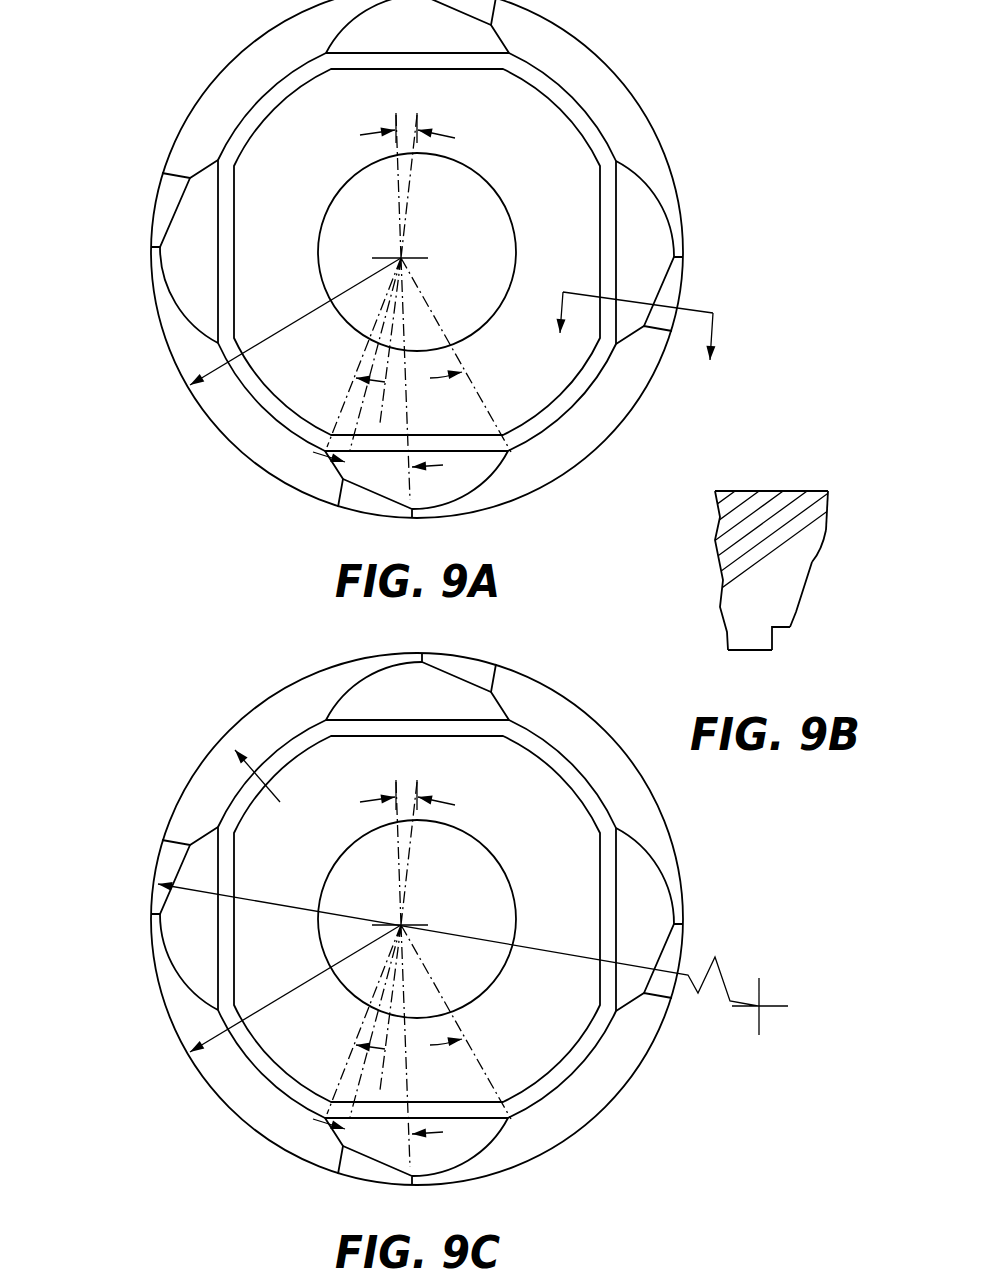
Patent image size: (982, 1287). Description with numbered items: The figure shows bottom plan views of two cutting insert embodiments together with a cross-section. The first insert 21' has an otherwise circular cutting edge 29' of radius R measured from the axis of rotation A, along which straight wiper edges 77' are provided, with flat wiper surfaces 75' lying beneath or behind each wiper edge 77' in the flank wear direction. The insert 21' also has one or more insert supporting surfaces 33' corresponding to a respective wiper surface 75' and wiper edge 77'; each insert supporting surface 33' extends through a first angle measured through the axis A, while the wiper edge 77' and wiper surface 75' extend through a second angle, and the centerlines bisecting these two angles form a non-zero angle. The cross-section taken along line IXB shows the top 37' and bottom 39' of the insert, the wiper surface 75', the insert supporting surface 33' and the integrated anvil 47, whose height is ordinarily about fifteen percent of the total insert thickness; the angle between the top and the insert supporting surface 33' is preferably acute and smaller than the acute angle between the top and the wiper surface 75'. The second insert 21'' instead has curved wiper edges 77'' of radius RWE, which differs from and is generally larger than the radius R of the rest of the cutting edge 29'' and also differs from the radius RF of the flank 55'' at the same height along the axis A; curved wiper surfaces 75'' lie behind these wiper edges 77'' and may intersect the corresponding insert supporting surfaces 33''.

In FIG. 9A, the insert 21' is at (364, 259).
In FIG. 9A, the cutting edge 29' is at (388, 265).
In FIG. 9A, the insert supporting surface 33' is at (417, 274).
In FIG. 9B, the insert supporting surface 33' is at (835, 594).
In FIG. 9A, the flat wiper surface 75' is at (383, 253).
In FIG. 9B, the flat wiper surface 75' is at (852, 539).
In FIG. 9A, the straight wiper edge 77' is at (376, 258).
In FIG. 9B, the straight wiper edge 77' is at (857, 491).
In FIG. 9B, the top 37' is at (771, 468).
In FIG. 9B, the integrated anvil 47 is at (774, 642).
In FIG. 9B, the bottom 39' is at (763, 672).
In FIG. 9C, the flank 55'' is at (408, 919).
In FIG. 9C, the insert 21'' is at (326, 919).
In FIG. 9C, the cutting edge 29'' is at (378, 923).
In FIG. 9C, the insert supporting surface 33'' is at (417, 937).
In FIG. 9C, the curved wiper surface 75'' is at (374, 919).
In FIG. 9C, the curved wiper edge 77'' is at (382, 919).
In FIG. 9A, the axis of rotation A is at (405, 253).
In FIG. 9C, the axis of rotation A is at (411, 905).
In FIG. 9A, the radius of the cutting edge R is at (285, 332).
In FIG. 9C, the radius of the cutting edge R is at (295, 988).
In FIG. 9C, the radius of the flank RF is at (266, 790).
In FIG. 9C, the wiper edge radius RWE is at (473, 944).
In FIG. 9A, the section line IXB- IXB is at (628, 342).